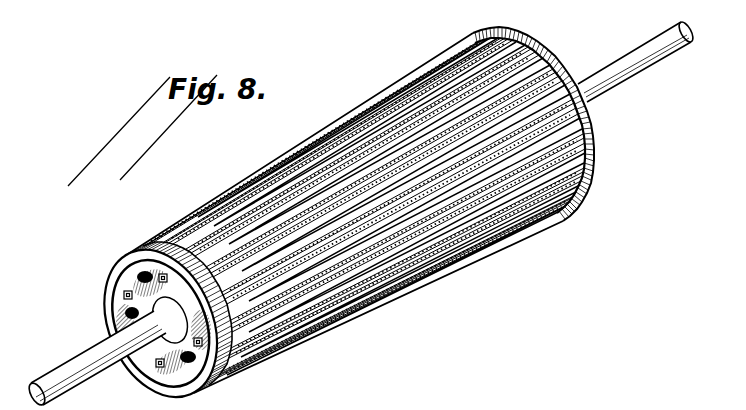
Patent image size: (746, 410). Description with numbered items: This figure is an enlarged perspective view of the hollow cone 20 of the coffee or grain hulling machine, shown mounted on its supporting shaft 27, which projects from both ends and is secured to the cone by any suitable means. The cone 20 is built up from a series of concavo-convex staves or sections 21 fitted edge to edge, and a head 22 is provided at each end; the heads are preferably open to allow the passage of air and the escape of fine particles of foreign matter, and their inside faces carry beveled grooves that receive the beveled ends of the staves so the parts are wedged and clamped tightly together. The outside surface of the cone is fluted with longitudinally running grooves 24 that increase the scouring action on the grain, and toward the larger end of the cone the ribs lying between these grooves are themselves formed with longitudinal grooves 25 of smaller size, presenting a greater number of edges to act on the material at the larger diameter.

The cone 20 is at (361, 210).
The staves or sections 21 is at (343, 147).
The head 22 is at (128, 283).
The longitudinally running grooves 24 is at (299, 196).
The longitudinal grooves of smaller size 25 is at (393, 140).
The shaft 27 is at (63, 373).